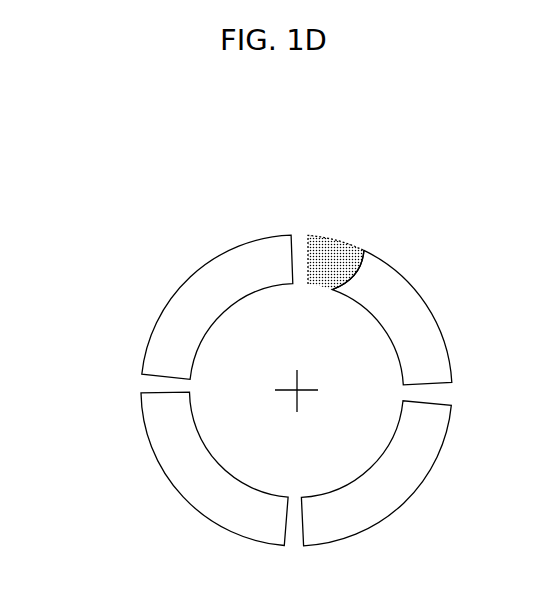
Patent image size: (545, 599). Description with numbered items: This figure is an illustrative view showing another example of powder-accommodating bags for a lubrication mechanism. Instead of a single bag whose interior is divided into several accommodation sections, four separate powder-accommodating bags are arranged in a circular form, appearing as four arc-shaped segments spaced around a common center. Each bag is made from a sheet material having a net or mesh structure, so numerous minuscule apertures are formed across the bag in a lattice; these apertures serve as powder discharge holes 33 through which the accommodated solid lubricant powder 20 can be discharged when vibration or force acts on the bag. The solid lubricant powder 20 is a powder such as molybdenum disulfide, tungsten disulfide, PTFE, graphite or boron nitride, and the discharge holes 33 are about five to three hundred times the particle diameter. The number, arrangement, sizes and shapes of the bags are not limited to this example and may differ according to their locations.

The solid lubricant powder 20 is at (330, 250).
The powder discharge holes 33 is at (343, 239).